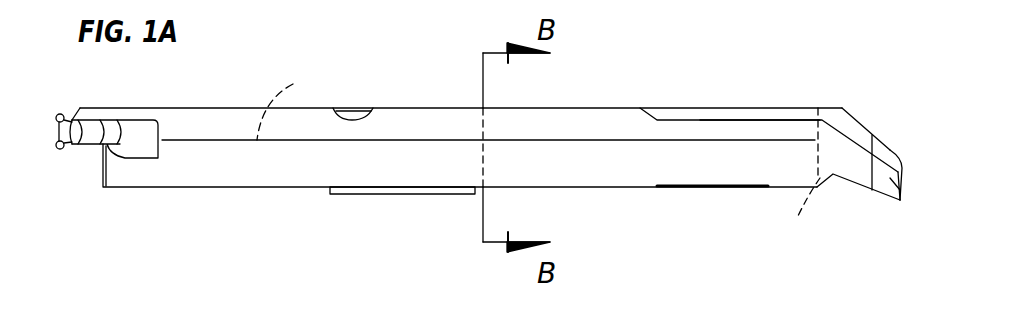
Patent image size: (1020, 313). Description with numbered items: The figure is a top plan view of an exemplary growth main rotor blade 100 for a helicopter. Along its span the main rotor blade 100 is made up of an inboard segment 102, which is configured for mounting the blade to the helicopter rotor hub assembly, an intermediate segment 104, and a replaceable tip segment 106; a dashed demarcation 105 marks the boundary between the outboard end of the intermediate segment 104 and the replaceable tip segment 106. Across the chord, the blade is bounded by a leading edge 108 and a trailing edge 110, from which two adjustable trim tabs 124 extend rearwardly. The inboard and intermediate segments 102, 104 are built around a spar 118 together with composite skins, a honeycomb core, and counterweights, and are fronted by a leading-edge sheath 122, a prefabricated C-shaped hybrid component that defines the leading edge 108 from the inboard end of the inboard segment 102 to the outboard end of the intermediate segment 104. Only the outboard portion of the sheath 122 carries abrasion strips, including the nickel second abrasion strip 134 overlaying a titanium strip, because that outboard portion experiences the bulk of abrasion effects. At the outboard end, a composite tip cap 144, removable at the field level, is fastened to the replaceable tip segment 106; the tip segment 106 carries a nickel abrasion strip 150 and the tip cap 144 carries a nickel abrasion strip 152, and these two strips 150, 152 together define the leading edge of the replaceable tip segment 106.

The main rotor blade 100 is at (567, 68).
The inboard segment 102 is at (108, 104).
The intermediate segment 104 is at (432, 82).
The demarcation 105 is at (802, 176).
The replaceable tip segment 106 is at (847, 198).
The leading edge 108 is at (685, 103).
The trailing edge 110 is at (237, 190).
The spar 118 is at (350, 113).
The leading-edge sheath 122 is at (295, 105).
The adjustable trim tabs 124 is at (397, 197).
The second abrasion strip 134 is at (777, 112).
The composite tip cap 144 is at (902, 202).
The abrasion strip 150 is at (842, 120).
The abrasion strip 152 is at (883, 150).